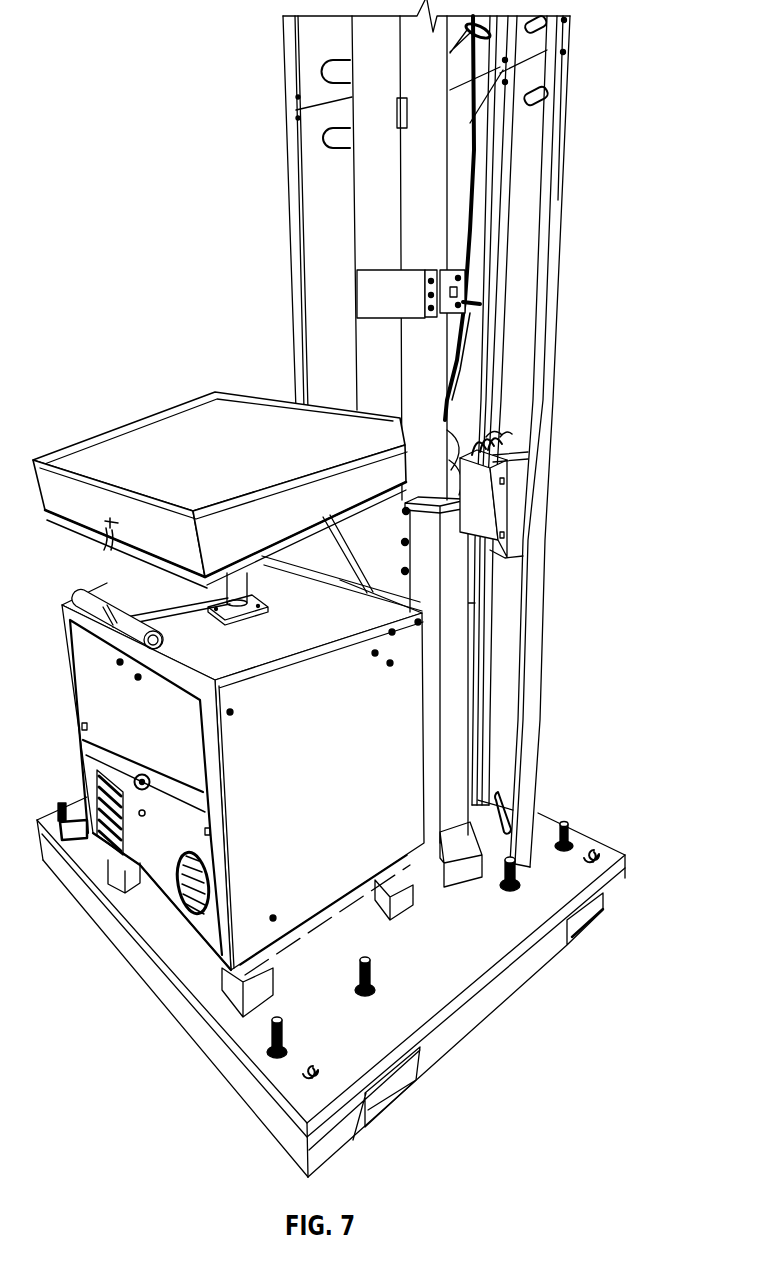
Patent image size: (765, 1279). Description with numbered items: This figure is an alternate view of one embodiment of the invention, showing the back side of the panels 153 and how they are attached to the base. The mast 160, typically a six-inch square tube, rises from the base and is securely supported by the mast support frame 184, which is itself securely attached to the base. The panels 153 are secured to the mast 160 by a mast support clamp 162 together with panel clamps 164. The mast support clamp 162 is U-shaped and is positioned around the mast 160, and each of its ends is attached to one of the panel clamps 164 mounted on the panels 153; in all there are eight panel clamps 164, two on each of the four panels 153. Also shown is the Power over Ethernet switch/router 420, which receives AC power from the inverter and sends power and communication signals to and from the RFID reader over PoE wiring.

The panel 153 is at (503, 73).
The mast 160 is at (367, 260).
The mast support clamp 162 is at (350, 298).
The panel clamp 164 is at (457, 270).
The mast support frame 184 is at (420, 558).
The Power over Ethernet (PoE) switch/router 420 is at (495, 493).